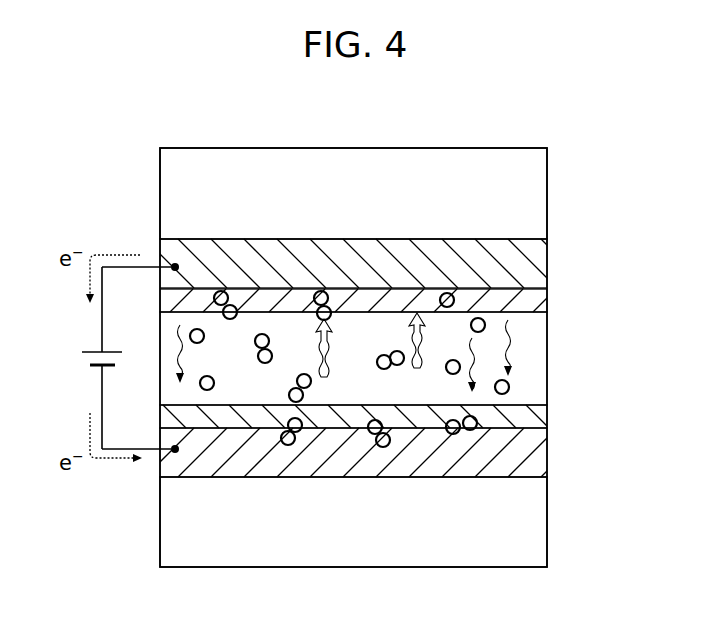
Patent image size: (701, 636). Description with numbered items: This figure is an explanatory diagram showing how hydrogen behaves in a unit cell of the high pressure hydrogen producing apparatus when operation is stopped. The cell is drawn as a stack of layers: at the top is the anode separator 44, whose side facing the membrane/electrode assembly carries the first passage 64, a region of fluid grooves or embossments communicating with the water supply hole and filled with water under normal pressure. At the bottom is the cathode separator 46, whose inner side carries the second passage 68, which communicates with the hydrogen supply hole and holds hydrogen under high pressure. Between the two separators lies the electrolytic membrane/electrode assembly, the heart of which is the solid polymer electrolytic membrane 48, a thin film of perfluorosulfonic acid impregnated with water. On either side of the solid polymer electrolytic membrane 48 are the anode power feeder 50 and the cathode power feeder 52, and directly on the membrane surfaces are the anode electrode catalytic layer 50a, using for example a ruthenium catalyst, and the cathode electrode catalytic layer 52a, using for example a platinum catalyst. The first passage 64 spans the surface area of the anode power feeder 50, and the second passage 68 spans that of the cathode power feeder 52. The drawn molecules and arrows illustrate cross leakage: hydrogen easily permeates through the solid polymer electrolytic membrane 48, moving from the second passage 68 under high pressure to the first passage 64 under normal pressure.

The anode separator 44 is at (549, 183).
The cathode separator 46 is at (551, 521).
The solid polymer electrolytic membrane 48 is at (532, 375).
The anode power feeder 50 is at (535, 266).
The anode electrode catalytic layer 50a is at (535, 303).
The cathode power feeder 52 is at (535, 458).
The cathode electrode catalytic layer 52a is at (540, 420).
The first passage 64 is at (484, 155).
The second passage 68 is at (478, 556).